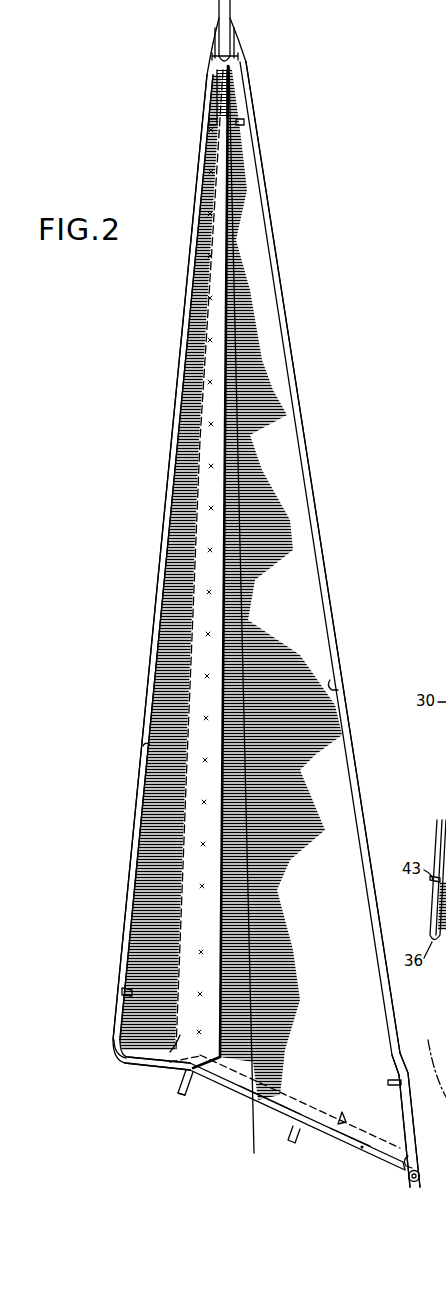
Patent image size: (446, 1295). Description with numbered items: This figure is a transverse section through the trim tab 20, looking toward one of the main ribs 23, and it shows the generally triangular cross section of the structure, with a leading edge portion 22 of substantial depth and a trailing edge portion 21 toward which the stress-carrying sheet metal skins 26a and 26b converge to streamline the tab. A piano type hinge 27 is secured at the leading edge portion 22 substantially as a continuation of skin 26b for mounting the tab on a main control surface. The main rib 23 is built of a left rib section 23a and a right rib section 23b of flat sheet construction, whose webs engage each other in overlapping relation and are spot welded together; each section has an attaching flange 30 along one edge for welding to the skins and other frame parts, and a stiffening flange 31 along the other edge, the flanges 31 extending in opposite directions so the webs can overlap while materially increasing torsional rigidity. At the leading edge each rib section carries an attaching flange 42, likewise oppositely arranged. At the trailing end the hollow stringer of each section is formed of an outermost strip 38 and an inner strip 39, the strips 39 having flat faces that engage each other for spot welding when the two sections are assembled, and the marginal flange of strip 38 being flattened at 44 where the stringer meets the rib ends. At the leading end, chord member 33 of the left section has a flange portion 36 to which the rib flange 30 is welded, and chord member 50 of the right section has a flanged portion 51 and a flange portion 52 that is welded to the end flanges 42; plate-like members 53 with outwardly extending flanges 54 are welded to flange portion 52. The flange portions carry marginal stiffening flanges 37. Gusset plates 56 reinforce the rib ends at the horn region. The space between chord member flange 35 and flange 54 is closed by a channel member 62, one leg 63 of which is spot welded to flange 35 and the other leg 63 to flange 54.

The trim tab 20 is at (299, 402).
The trailing edge portion 21 is at (233, 22).
The leading edge portion 22 is at (385, 1161).
The main rib 23 is at (287, 601).
The left rib section 23a is at (213, 937).
The right rib section 23b is at (330, 789).
The sheet metal skin 26a is at (146, 690).
The sheet metal skin 26b is at (336, 602).
The piano type hinge 27 is at (411, 1182).
The attaching flange 30 is at (146, 746).
The stiffening flange 31 is at (218, 702).
The chord member 33 is at (136, 1068).
The chord member flange 35 is at (182, 1094).
The flange portion 36 is at (120, 1040).
The marginal stiffening flange 37 is at (128, 992).
The outermost strip 38 is at (213, 42).
The strip 39 is at (218, 56).
The attaching flange 42 is at (163, 1063).
The flattened portion 44 is at (256, 125).
The chord member 50 is at (416, 1156).
The flanged portion 51 is at (401, 1106).
The flange portion 52 is at (350, 1138).
The plate-like member 53 is at (240, 465).
The outwardly extending flange 54 is at (292, 1142).
The gusset plate 56 is at (226, 160).
The channel member 62 is at (287, 1113).
The leg or flange 63 is at (192, 1088).